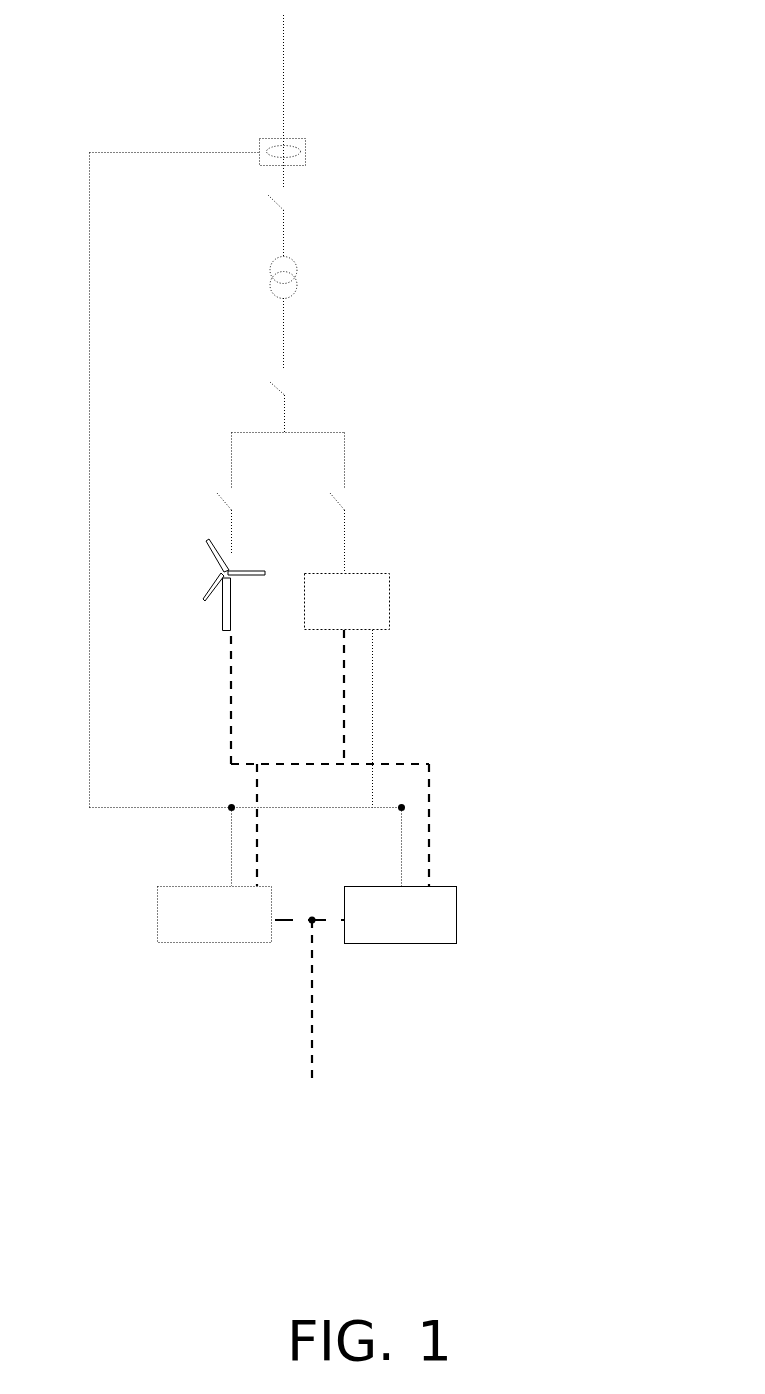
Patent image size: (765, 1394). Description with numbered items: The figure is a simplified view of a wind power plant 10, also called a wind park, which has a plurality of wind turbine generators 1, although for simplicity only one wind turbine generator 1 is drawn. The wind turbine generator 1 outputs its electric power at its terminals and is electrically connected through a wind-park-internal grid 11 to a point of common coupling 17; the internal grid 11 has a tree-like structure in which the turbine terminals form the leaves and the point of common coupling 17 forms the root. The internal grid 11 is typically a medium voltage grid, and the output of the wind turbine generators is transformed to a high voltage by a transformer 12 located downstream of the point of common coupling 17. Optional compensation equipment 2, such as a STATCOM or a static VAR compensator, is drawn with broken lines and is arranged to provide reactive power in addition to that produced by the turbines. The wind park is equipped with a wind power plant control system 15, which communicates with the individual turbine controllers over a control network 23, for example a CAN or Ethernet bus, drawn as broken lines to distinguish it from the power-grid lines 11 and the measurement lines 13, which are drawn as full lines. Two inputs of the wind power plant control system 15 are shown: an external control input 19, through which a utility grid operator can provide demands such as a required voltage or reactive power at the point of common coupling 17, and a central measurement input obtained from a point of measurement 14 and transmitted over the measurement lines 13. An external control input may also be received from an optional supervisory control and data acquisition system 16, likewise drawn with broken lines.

The wind turbine generator 1 is at (234, 585).
The compensation equipment 2 is at (358, 602).
The wind power plant 10 is at (566, 831).
The wind-park-internal grid 11 is at (294, 316).
The transformer 12 is at (268, 250).
The measurement lines 13 is at (232, 520).
The point of measurement 14 is at (301, 154).
The wind power plant control system 15 is at (401, 938).
The supervisory control and data acquisition system 16 is at (215, 938).
The point of common coupling 17 is at (333, 35).
The external control input 19 is at (315, 1017).
The control network 23 is at (332, 777).